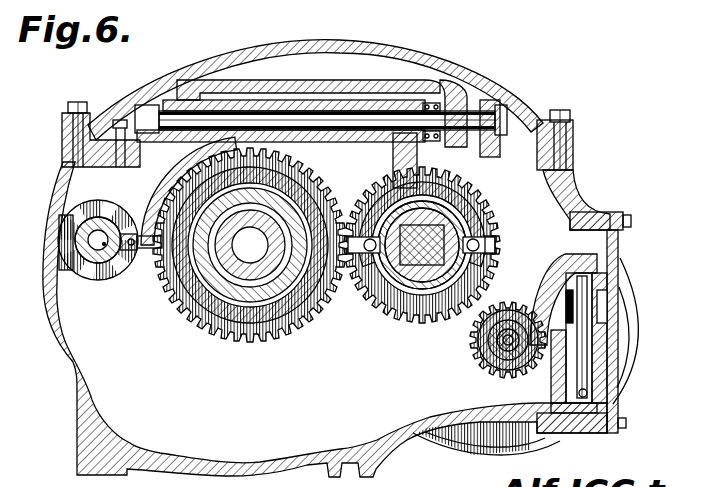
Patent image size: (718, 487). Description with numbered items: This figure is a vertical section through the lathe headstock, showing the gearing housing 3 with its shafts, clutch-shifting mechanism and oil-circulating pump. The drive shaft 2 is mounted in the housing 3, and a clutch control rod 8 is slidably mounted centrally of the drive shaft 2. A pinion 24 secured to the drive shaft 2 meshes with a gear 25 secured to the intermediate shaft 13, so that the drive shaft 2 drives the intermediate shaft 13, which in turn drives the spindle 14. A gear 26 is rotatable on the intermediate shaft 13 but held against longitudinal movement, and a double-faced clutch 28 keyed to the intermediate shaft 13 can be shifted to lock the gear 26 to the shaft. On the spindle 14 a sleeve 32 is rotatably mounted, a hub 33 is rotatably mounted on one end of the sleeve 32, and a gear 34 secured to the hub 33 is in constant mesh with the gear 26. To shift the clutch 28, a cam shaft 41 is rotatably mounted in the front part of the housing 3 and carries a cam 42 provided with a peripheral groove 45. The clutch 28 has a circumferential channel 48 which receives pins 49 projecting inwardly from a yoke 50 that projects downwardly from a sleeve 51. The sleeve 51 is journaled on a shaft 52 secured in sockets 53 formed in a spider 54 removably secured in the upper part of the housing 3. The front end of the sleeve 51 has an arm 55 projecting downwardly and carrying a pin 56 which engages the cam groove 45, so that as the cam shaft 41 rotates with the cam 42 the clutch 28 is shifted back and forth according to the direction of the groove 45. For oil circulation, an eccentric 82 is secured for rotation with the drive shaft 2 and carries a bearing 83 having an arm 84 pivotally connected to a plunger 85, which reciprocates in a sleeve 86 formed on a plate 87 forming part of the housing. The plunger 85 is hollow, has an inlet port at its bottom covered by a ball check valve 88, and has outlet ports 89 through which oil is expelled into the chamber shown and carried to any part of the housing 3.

The drive shaft 2 is at (488, 340).
The gearing housing 3 is at (74, 370).
The clutch control rod 8 is at (493, 350).
The intermediate shaft 13 is at (405, 265).
The spindle 14 is at (247, 268).
The pinion 24 is at (508, 292).
The gear 25 is at (497, 252).
The gear 26 is at (420, 322).
The double-faced clutch 28 is at (395, 262).
The sleeve 32 is at (245, 288).
The hub 33 is at (263, 292).
The gear 34 is at (200, 322).
The cam shaft 41 is at (100, 215).
The cam 42 is at (130, 234).
The peripheral groove 45 is at (97, 282).
The circumferential channel 48 is at (412, 278).
The pins 49 is at (472, 240).
The yoke 50 is at (478, 196).
The sleeve 51 is at (350, 105).
The shaft 52 is at (398, 120).
The sockets 53 is at (145, 103).
The spider 54 is at (283, 86).
The arm 55 is at (178, 170).
The pin 56 is at (138, 253).
The eccentric 82 is at (488, 353).
The bearing 83 is at (500, 377).
The arm 84 is at (546, 266).
The plunger 85 is at (586, 272).
The sleeve 86 is at (566, 408).
The plate 87 is at (606, 283).
The ball check valve 88 is at (590, 392).
The outlet ports 89 is at (604, 318).